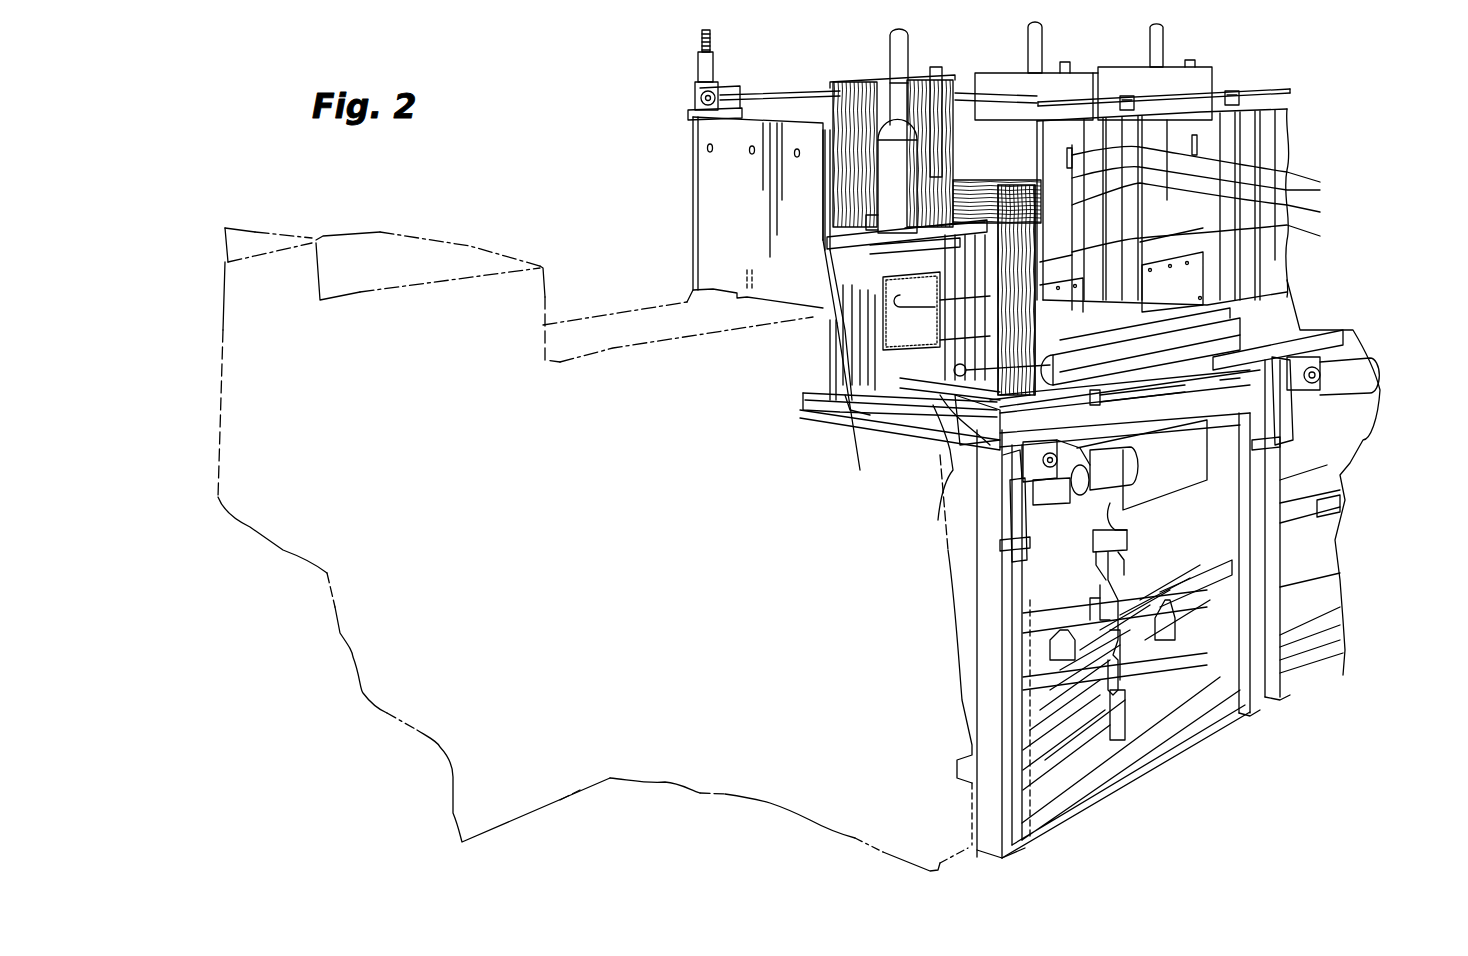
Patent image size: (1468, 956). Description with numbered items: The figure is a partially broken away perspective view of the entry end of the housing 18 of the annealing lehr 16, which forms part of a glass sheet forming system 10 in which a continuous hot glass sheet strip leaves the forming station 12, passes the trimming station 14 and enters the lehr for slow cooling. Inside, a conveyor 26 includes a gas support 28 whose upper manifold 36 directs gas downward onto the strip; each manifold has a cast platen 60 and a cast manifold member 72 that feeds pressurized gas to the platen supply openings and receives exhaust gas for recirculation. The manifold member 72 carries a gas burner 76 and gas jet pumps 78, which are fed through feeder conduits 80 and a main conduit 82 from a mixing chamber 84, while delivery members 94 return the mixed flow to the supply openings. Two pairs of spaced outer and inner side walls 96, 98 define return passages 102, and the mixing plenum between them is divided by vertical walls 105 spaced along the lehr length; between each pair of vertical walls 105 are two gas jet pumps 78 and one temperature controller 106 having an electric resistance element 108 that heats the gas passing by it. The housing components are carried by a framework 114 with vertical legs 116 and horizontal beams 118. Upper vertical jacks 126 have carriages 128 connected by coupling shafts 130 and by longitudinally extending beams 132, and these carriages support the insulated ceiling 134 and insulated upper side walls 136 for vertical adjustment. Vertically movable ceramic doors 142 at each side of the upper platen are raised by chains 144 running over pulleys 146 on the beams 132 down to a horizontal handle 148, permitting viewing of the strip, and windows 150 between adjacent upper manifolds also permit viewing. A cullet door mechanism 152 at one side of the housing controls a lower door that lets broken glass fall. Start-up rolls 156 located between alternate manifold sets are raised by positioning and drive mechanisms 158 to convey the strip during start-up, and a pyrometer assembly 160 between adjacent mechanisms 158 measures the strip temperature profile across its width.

The glass sheet forming system 10 is at (617, 178).
The forming station 12 is at (432, 243).
The trimming station 14 is at (636, 298).
The annealing lehr 16 is at (1093, 58).
The housing 18 is at (1292, 100).
The conveyor 26 is at (838, 415).
The gas support 28 is at (895, 410).
The upper manifold 36 is at (822, 254).
The cast platen 60 is at (960, 440).
The manifold member 72 is at (828, 283).
The gas burner 76 is at (888, 44).
The gas jet pump 78 is at (955, 325).
The feeder conduit 80 is at (908, 300).
The main conduit 82 is at (870, 232).
The mixing chamber 84 is at (845, 125).
The delivery member 94 is at (911, 311).
The outer side wall 96 is at (920, 408).
The inner side wall 98 is at (803, 395).
The return passage 102 is at (812, 410).
The vertical wall 105 is at (840, 332).
The temperature controller 106 is at (872, 352).
The electric resistance element 108 is at (828, 375).
The framework 114 is at (1330, 470).
The vertical leg 116 is at (1020, 780).
The horizontal beam 118 is at (1310, 357).
The upper vertical jack 126 is at (693, 72).
The carriage 128 is at (697, 110).
The coupling shaft 130 is at (755, 94).
The longitudinally extending beam 132 is at (1290, 140).
The insulated ceiling 134 is at (965, 180).
The insulated upper side wall 136 is at (997, 95).
The vertically movable door 142 is at (960, 468).
The chain 144 is at (1215, 201).
The pulley 146 is at (1215, 169).
The horizontal handle 148 is at (1215, 237).
The window 150 is at (1140, 346).
The cullet door mechanism 152 is at (1125, 580).
The start-up roll 156 is at (930, 435).
The positioning and drive mechanism 158 is at (998, 500).
The pyrometer assembly 160 is at (1150, 385).